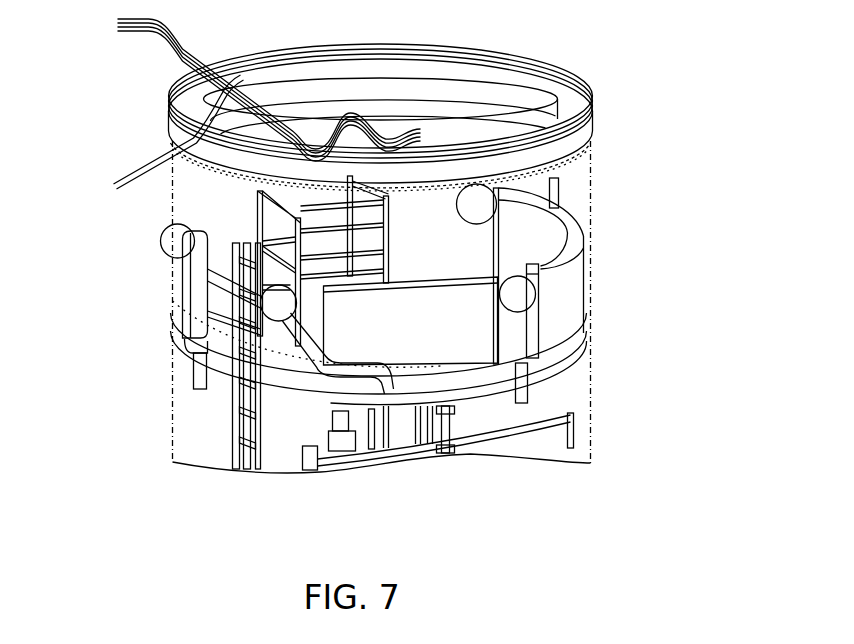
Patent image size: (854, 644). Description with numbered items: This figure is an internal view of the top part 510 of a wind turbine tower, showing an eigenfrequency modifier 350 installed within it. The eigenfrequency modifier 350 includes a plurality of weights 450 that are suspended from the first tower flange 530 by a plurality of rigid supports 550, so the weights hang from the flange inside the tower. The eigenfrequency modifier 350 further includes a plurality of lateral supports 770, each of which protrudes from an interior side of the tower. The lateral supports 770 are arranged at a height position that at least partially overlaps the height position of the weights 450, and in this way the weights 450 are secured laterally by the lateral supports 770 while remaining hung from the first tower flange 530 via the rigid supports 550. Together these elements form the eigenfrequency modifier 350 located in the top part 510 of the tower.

The eigenfrequency modifier 350 is at (744, 146).
The plurality of weights 450 is at (573, 236).
The top part 510 is at (116, 148).
The first tower flange 530 is at (163, 120).
The plurality of rigid supports 550 is at (583, 198).
The plurality of lateral supports 770 is at (590, 275).